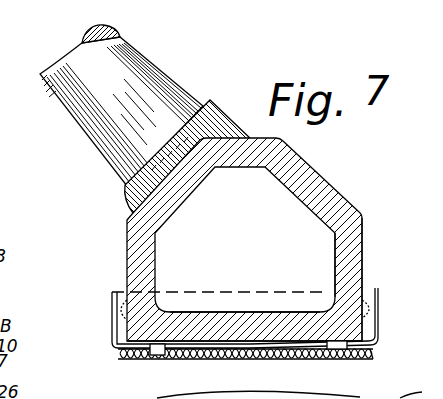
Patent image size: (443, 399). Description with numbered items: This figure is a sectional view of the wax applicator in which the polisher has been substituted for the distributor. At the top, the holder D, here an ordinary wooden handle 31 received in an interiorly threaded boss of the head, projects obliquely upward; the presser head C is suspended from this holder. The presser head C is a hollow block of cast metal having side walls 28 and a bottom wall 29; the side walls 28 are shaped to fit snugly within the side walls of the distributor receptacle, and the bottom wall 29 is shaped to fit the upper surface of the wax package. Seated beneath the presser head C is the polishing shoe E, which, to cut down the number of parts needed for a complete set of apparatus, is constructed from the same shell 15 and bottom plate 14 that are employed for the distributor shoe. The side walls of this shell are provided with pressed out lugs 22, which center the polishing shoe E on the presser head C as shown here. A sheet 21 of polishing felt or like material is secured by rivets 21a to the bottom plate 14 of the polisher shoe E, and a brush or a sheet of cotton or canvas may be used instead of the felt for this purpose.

The holder D is at (80, 38).
The wooden handle 31 is at (44, 72).
The presser head C is at (333, 183).
The side walls 28 is at (362, 241).
The bottom wall 29 is at (243, 313).
The pressed out lugs 22 is at (115, 316).
The shell 15 is at (378, 298).
The polishing shoe E is at (380, 308).
The bottom plate 14 is at (377, 327).
The sheet of polishing felt 21 is at (243, 357).
The rivets 21a is at (331, 352).